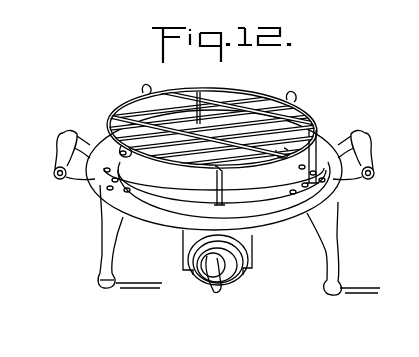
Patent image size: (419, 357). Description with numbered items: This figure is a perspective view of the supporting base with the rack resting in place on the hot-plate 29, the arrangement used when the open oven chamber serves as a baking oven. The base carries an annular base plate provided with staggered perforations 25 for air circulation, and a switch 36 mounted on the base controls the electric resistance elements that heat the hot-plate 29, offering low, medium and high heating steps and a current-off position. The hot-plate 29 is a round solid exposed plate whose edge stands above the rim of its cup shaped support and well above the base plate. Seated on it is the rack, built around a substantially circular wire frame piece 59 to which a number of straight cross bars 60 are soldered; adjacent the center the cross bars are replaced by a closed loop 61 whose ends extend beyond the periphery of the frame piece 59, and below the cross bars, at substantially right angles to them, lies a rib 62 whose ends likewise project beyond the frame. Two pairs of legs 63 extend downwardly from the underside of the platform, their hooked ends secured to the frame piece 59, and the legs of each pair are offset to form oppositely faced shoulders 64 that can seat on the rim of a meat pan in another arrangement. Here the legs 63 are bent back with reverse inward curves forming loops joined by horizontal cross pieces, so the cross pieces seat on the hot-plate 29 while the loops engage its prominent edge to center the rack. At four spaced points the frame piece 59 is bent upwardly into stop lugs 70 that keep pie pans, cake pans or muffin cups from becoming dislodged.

The staggered perforations 25 is at (128, 193).
The hot-plate 29 is at (150, 168).
The switch 36 is at (185, 245).
The circular wire frame piece 59 is at (209, 115).
The cross bars 60 is at (132, 116).
The closed loop 61 is at (246, 100).
The rib 62 is at (158, 100).
The legs 63 is at (317, 157).
The shoulders 64 is at (322, 156).
The stop lugs 70 is at (144, 87).